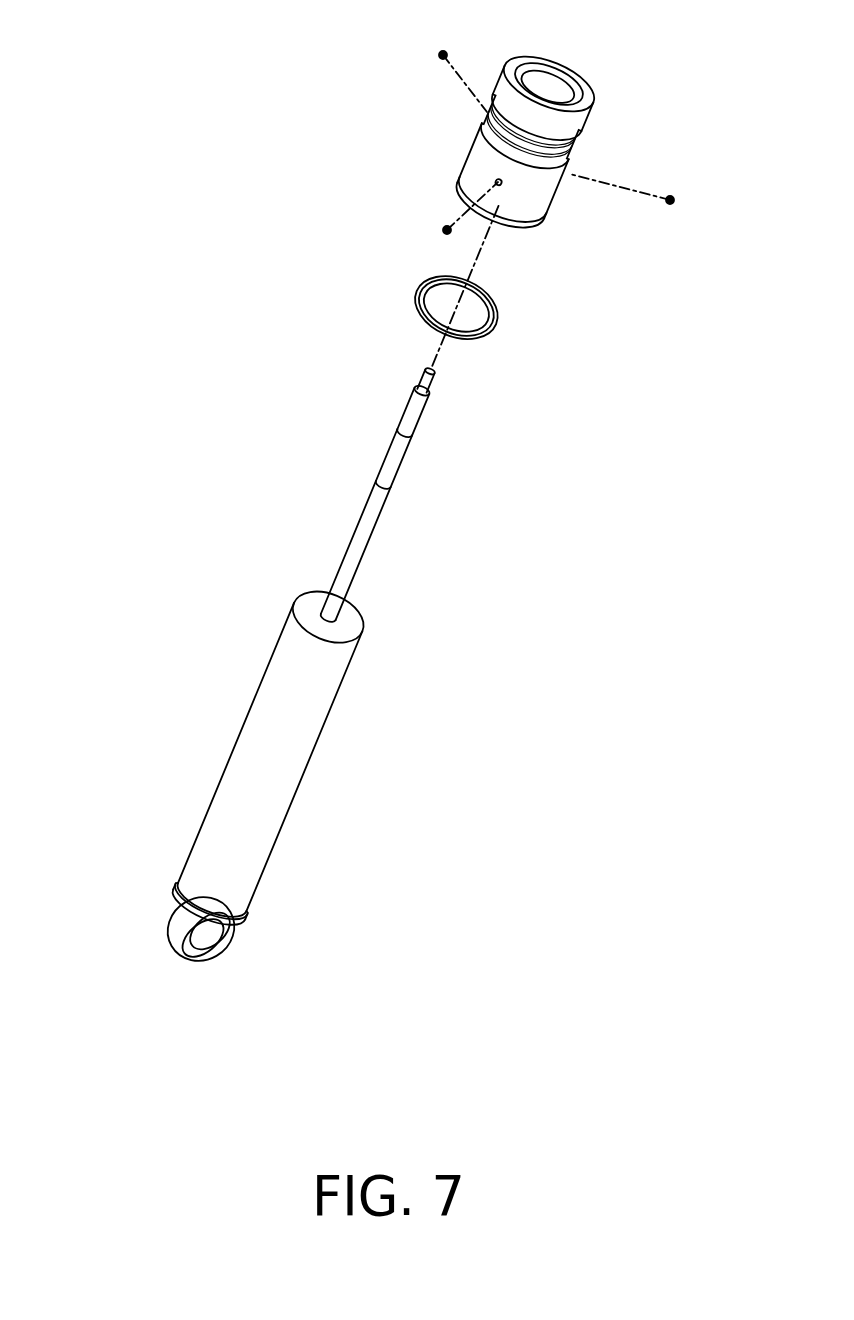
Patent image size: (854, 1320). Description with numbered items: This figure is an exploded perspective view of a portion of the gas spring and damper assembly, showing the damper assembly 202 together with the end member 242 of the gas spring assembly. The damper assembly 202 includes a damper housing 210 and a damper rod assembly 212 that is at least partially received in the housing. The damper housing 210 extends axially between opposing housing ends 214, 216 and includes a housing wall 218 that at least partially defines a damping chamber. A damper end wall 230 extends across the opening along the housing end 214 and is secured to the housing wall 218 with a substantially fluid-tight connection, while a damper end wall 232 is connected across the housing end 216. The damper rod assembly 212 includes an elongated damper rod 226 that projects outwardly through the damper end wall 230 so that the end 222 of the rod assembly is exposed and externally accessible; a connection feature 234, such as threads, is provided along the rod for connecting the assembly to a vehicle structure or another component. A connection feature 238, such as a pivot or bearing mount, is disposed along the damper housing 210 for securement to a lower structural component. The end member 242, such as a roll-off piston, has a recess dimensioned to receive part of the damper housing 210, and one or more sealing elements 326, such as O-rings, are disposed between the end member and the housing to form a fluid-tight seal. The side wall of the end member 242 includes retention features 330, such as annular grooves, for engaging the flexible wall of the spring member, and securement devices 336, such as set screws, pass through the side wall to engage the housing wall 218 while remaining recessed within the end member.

The damper assembly 202 is at (385, 722).
The damper housing 210 is at (245, 720).
The damper rod assembly 212 is at (370, 573).
The housing end 214 is at (278, 600).
The housing end 216 is at (167, 880).
The housing wall 218 is at (290, 811).
The end of damper rod assembly 222 is at (452, 405).
The elongated damper rod 226 is at (356, 530).
The damper end wall 230 is at (350, 625).
The damper end wall 232 is at (218, 946).
The connection feature 234 is at (405, 414).
The connection feature 238 is at (173, 937).
The end member 242 is at (560, 193).
The sealing element 326 is at (501, 314).
The retention feature 330 is at (574, 141).
The securement device 336 is at (440, 55).